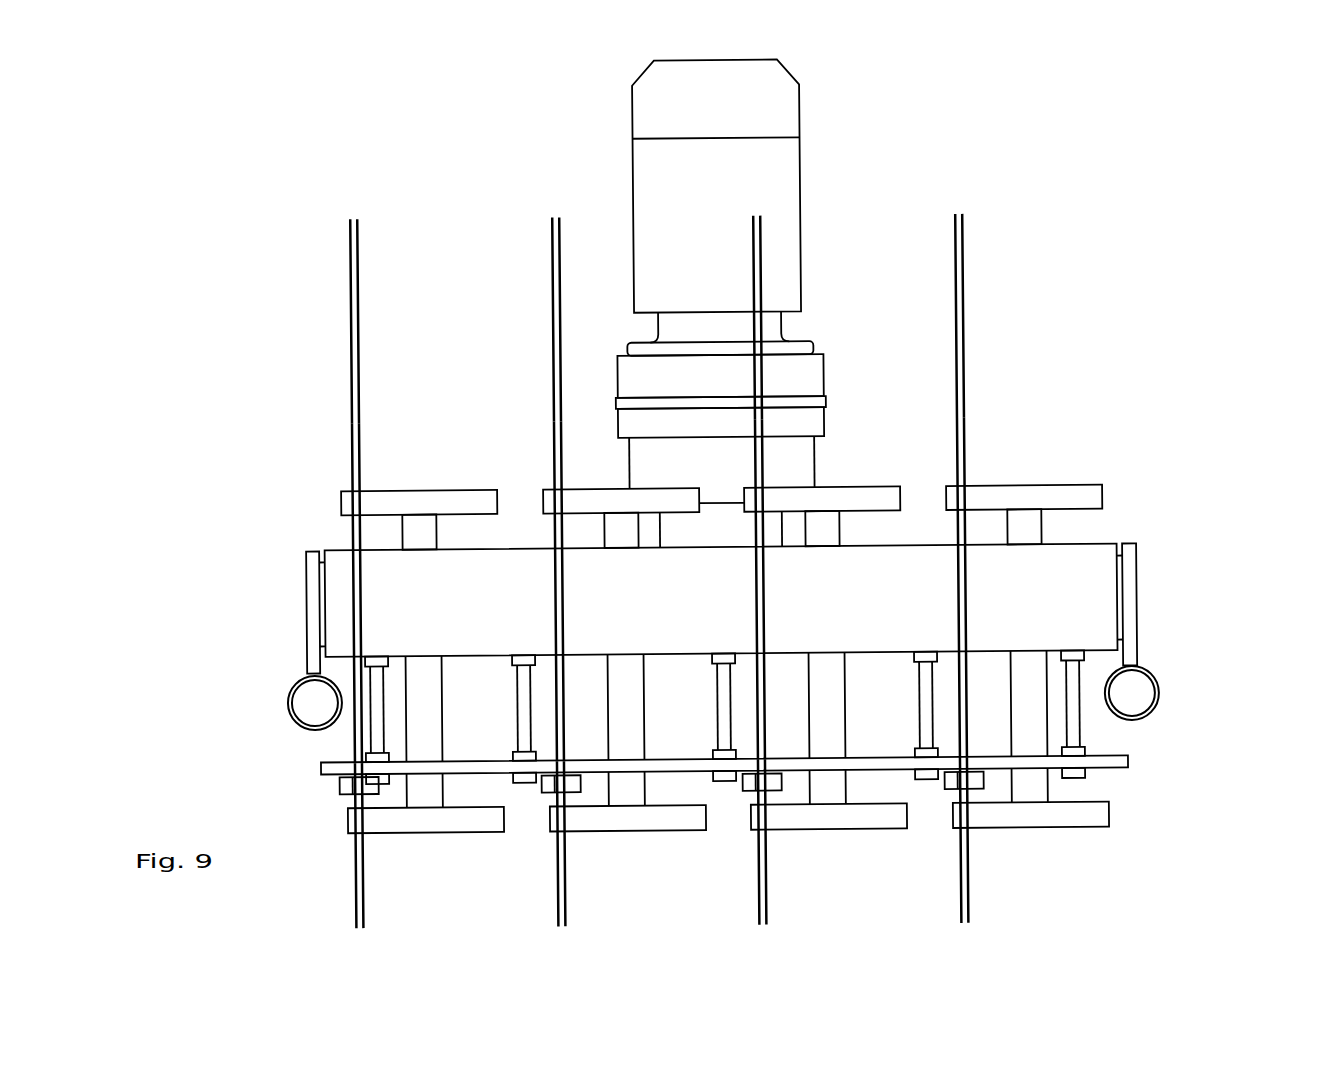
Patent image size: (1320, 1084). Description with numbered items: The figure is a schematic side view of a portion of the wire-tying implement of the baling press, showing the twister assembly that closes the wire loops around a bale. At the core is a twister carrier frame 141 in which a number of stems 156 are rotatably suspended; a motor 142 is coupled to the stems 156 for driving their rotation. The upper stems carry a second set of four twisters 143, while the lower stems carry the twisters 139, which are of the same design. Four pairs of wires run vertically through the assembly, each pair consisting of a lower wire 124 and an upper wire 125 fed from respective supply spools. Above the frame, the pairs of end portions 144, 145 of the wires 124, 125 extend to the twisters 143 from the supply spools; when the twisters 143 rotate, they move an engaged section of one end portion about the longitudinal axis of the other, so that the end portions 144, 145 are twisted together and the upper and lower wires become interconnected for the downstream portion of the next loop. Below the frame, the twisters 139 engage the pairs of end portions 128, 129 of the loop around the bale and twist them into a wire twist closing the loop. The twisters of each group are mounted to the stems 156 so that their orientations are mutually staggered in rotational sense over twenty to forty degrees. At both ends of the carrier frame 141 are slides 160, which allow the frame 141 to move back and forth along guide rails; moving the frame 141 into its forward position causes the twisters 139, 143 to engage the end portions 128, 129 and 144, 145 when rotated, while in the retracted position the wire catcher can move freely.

The twister carrier frame 141 is at (777, 607).
The motor 142 is at (742, 274).
The second set of twisters 143 is at (722, 483).
The twisters 139 is at (729, 850).
The stem 156 is at (829, 728).
The slides 160 is at (724, 698).
The end portion of wire extending from supply spool 144 is at (621, 319).
The end portion of wire extending from supply spool 145 is at (692, 318).
The lower wire 124 is at (622, 516).
The upper wire 125 is at (694, 516).
The end portion of loop 128 is at (627, 846).
The end portion of loop 129 is at (699, 846).